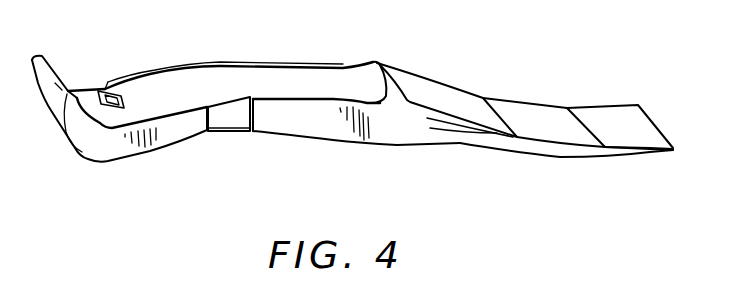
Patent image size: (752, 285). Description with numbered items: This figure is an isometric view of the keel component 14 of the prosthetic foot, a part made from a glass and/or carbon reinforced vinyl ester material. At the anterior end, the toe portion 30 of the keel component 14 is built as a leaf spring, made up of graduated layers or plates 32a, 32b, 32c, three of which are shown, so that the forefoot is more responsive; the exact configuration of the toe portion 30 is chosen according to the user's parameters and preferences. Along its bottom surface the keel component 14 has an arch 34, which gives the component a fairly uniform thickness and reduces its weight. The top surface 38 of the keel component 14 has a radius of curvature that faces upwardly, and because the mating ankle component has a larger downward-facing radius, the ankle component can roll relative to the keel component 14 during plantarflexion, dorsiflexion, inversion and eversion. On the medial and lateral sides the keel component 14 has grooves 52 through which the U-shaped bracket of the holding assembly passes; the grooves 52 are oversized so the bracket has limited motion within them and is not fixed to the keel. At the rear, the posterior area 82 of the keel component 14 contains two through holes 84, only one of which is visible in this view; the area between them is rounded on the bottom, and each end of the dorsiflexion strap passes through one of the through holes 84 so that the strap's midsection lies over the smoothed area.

The keel component 14 is at (390, 145).
The toe portion 30 is at (562, 155).
The graduated layer or plate 32a is at (430, 97).
The graduated layer or plate 32b is at (518, 117).
The graduated layer or plate 32c is at (611, 130).
The arch 34 is at (278, 134).
The top surface 38 is at (271, 80).
The grooves 52 is at (228, 110).
The posterior area 82 is at (108, 156).
The through holes 84 is at (103, 90).